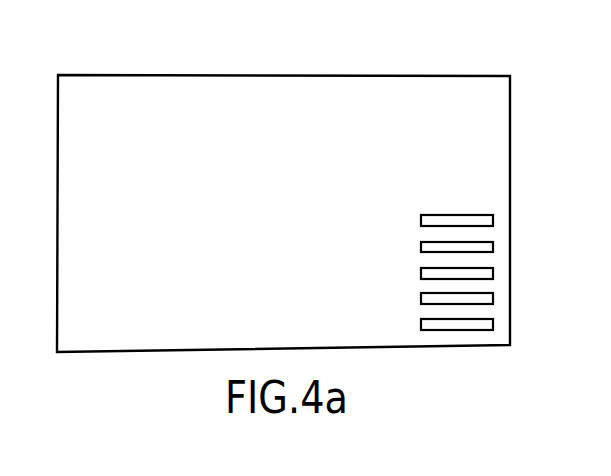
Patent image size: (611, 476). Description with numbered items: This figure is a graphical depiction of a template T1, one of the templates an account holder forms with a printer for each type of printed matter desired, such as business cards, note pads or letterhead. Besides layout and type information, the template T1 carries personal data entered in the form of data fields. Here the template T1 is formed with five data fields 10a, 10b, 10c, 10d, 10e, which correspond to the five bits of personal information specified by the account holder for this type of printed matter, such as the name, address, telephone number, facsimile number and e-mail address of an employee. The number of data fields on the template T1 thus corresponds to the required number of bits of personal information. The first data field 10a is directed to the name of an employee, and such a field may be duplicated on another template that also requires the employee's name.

The template T1 is at (322, 58).
The data field 10a is at (493, 219).
The data field 10b is at (493, 245).
The data field 10c is at (493, 271).
The data field 10d is at (493, 297).
The data field 10e is at (493, 323).